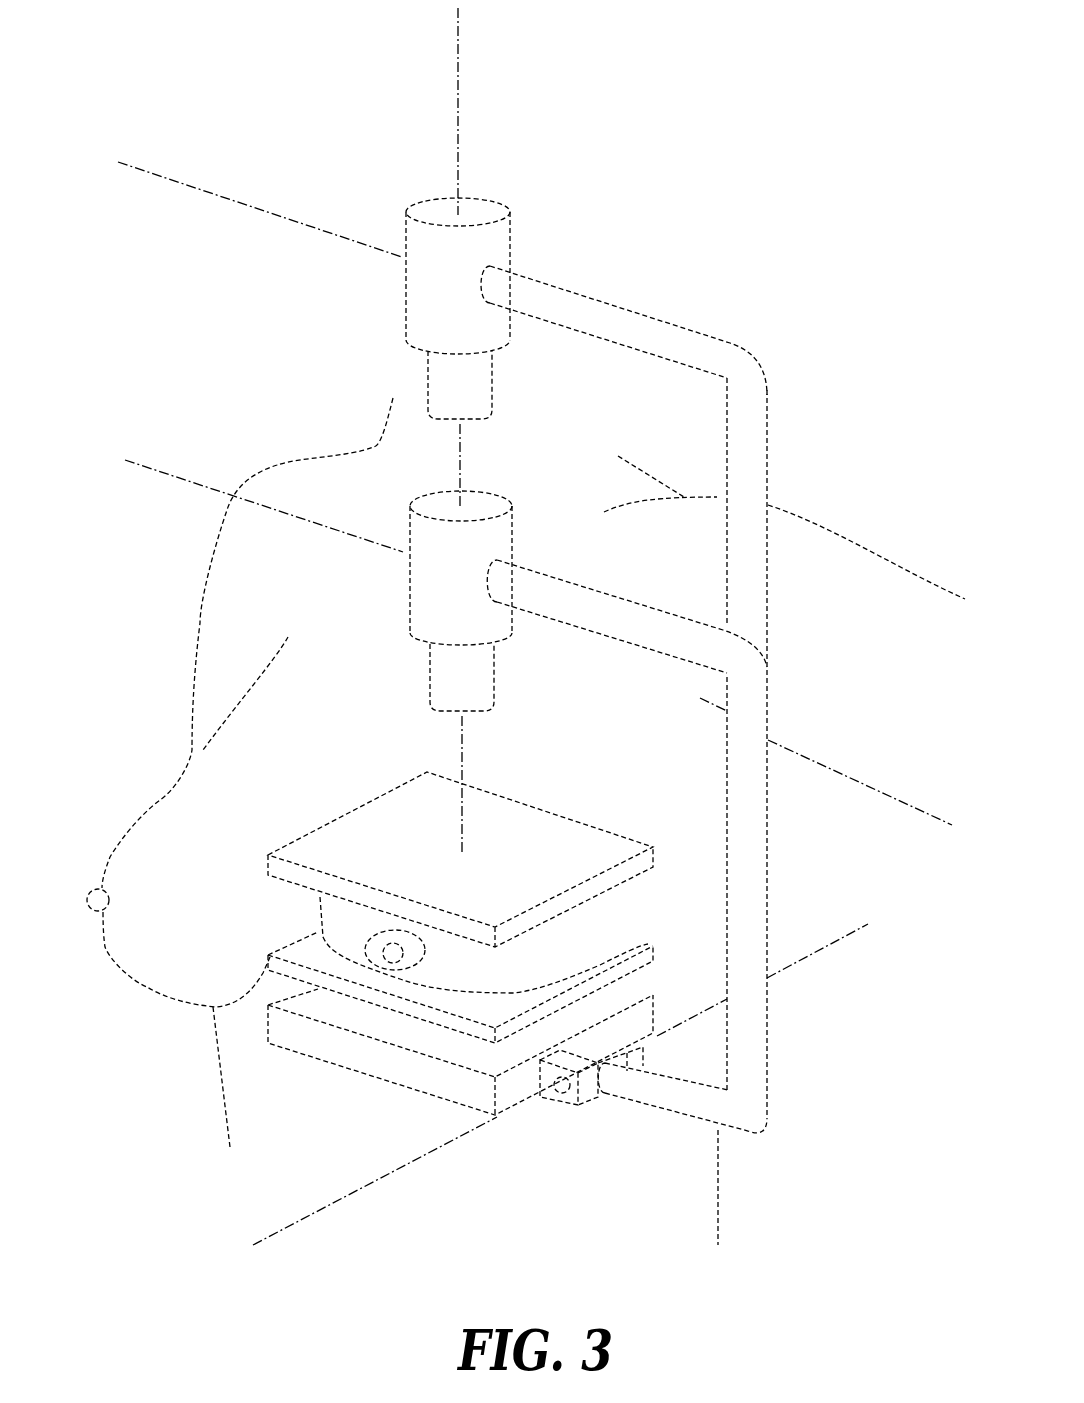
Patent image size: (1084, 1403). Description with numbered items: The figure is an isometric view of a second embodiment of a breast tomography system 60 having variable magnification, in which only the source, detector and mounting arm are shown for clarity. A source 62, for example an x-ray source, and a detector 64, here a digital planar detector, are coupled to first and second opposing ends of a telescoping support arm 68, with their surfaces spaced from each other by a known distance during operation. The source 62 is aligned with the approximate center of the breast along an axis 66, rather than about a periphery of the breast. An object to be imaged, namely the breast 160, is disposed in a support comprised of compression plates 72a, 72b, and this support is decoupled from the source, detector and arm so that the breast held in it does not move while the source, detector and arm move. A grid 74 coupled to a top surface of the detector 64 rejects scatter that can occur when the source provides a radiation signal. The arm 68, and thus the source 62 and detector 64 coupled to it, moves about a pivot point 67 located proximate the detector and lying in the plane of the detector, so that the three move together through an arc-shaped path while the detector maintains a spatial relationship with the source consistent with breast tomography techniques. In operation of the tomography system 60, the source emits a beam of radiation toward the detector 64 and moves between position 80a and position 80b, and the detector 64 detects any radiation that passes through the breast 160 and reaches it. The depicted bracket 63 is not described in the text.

The breast tomography system 60 is at (308, 102).
The source 62 is at (488, 243).
The lower support arm 63 is at (757, 1085).
The detector 64 is at (343, 1050).
The axis 66 is at (458, 70).
The pivot point 67 is at (558, 1100).
The telescoping support arm 68 is at (750, 417).
The compression plate 72a is at (370, 830).
The compression plate 72b is at (300, 950).
The grid 74 is at (360, 1015).
The position 80a is at (232, 202).
The position 80b is at (507, 635).
The breast 160 is at (640, 895).